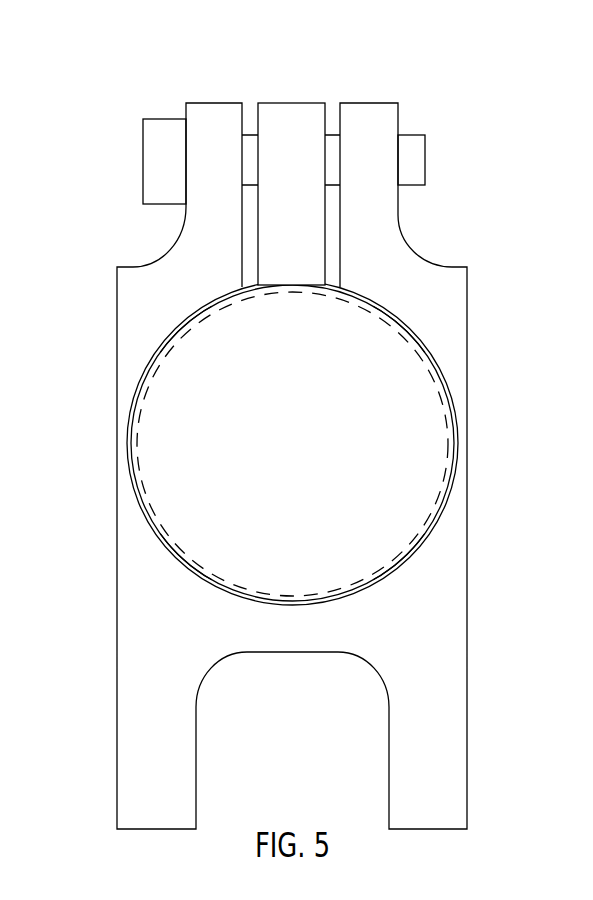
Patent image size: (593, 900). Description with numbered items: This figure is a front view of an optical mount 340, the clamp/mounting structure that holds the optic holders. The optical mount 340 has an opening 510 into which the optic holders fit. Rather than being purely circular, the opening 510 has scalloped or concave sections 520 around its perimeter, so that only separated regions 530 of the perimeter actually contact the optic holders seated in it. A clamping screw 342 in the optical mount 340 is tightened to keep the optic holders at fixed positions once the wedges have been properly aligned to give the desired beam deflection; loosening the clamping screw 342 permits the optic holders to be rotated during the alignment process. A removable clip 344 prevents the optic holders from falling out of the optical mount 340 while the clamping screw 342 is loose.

The optical mount 340 is at (88, 63).
The clamping screw 342 is at (142, 162).
The removable clip 344 is at (292, 102).
The opening 510 is at (307, 461).
The scalloped or concave sections 520 is at (130, 444).
The separated regions 530 is at (184, 327).